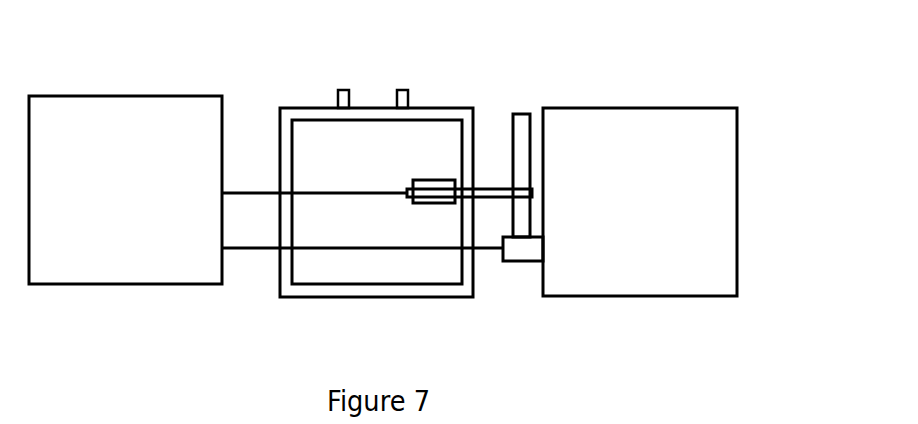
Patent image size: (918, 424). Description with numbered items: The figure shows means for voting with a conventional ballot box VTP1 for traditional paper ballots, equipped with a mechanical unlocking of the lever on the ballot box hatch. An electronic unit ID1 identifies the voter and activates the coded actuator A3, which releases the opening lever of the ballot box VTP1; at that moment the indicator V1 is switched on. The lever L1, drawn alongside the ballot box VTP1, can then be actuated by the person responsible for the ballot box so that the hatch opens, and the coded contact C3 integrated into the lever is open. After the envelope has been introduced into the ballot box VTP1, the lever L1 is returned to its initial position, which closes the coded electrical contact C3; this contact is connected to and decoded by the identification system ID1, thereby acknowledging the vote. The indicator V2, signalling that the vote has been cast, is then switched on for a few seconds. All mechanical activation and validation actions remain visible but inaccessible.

The electronic unit for identifying a voter ID1 is at (133, 267).
The indicator V1 is at (343, 90).
The indicator indicating vote cast V2 is at (402, 90).
The coded actuator A3 is at (438, 179).
The lever L1 is at (524, 118).
The coded contact C3 is at (518, 255).
The ballot box VTP1 is at (725, 202).